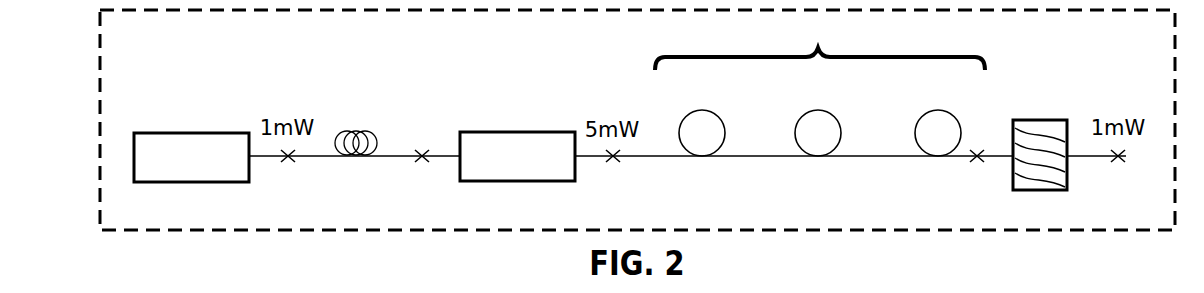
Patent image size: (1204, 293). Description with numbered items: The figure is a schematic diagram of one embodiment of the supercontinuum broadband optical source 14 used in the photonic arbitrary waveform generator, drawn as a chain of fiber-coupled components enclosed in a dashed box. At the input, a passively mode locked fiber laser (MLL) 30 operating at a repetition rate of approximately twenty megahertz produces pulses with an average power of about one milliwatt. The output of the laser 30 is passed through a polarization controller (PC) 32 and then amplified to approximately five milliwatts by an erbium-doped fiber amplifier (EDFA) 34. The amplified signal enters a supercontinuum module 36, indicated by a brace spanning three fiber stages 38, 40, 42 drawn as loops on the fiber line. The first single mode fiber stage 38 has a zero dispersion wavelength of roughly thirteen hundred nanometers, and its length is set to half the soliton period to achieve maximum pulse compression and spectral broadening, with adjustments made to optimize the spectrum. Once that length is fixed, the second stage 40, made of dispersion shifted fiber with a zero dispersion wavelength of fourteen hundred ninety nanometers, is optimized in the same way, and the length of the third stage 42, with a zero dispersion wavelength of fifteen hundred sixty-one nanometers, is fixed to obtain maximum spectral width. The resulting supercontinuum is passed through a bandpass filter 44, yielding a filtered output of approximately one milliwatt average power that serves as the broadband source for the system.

The broadband optical source 14 is at (98, 142).
The passively mode locked fiber laser 30 is at (175, 133).
The polarization controller 32 is at (374, 141).
The erbium-doped fiber amplifier 34 is at (488, 182).
The supercontinuum module 36 is at (816, 112).
The first single mode fiber stage 38 is at (686, 152).
The second stage 40 is at (836, 150).
The third stage 42 is at (916, 152).
The bandpass filter 44 is at (1027, 191).